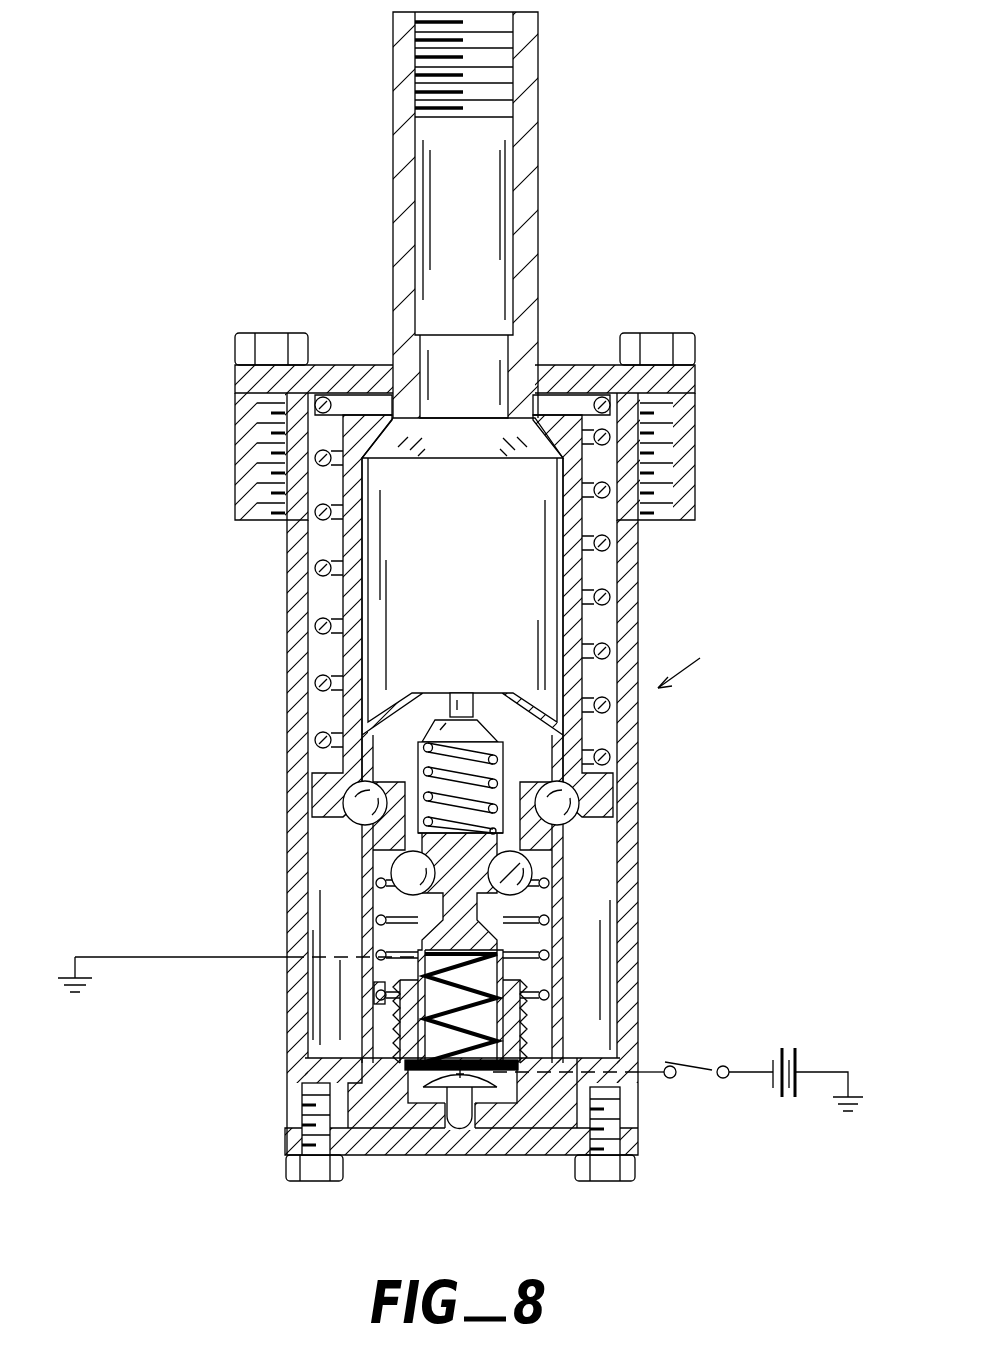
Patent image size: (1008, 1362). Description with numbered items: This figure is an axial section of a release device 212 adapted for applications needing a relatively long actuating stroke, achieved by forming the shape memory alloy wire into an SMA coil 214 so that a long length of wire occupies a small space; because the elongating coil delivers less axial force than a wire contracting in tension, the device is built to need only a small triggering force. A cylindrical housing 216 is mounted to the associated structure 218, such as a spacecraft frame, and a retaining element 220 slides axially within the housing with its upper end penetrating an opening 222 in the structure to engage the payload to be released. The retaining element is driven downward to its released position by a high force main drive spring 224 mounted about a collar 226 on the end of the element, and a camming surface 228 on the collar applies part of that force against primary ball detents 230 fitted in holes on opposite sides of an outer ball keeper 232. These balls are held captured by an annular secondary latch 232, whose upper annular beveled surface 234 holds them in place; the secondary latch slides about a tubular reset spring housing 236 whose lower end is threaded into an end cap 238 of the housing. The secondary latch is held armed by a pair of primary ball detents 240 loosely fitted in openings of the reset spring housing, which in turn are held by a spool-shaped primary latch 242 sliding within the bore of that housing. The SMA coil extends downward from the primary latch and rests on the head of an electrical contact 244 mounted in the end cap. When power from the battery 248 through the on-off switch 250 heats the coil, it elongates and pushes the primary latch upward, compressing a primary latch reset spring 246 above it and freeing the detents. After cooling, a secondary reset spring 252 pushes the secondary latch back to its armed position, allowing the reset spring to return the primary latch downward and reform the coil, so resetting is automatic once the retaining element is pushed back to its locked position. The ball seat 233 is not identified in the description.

The release device 212 is at (694, 658).
The SMA coil 214 is at (445, 1105).
The cylindrical housing 216 is at (635, 580).
The structure 218 is at (580, 375).
The retaining element 220 is at (397, 282).
The opening 222 is at (500, 395).
The main drive spring 224 is at (313, 675).
The collar 226 is at (345, 598).
The camming surface 228 is at (345, 800).
The primary ball detents 230 is at (383, 820).
The annular secondary latch 232 is at (345, 1045).
The ball seat 233 is at (560, 845).
The upper annular beveled surface 234 is at (585, 800).
The tubular reset spring housing 236 is at (432, 715).
The end cap 238 is at (547, 1105).
The primary ball detents 240 is at (523, 907).
The spool-shaped primary latch 242 is at (455, 912).
The electrical contact 244 is at (463, 1072).
The primary latch reset spring 246 is at (473, 750).
The battery 248 is at (778, 1093).
The on-off switch 250 is at (700, 1068).
The secondary reset spring 252 is at (375, 985).